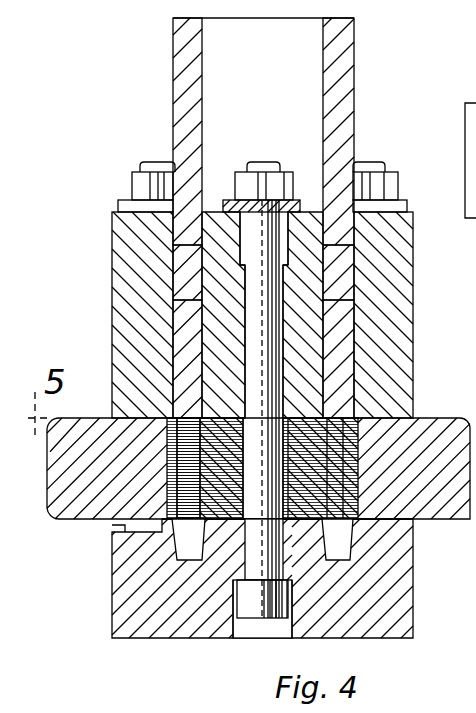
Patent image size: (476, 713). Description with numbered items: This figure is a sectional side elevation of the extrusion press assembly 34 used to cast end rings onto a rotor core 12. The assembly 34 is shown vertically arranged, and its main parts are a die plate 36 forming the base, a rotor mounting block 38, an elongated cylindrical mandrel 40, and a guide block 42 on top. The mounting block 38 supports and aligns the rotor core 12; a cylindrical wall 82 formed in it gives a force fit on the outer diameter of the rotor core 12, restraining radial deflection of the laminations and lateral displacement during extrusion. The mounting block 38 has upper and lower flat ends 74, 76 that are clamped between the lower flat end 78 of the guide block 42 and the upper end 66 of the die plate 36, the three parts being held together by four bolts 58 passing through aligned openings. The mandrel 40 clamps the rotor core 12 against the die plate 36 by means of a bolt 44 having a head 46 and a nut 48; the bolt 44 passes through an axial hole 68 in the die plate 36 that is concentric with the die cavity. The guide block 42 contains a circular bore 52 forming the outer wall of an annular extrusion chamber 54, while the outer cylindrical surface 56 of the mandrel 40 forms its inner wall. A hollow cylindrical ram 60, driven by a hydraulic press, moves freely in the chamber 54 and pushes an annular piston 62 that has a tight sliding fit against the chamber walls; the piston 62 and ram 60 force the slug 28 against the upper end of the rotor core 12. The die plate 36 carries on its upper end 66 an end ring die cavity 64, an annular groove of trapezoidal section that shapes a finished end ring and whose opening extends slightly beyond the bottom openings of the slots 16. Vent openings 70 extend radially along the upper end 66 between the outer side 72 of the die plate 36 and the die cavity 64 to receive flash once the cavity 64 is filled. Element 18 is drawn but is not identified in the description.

The ram 60 is at (345, 70).
The extrusion press assembly 34 is at (147, 146).
The bolts 58 is at (140, 162).
The nut 48 is at (247, 162).
The annular extrusion chamber 54 is at (222, 208).
The mandrel 40 is at (305, 225).
The annular piston 62 is at (348, 266).
The guide block 42 is at (400, 292).
The circular bore 52 is at (350, 348).
The outer cylindrical surface 56 is at (284, 342).
The slug 28 is at (356, 374).
The lower flat end 78 is at (370, 418).
The rotor mounting block 38 is at (458, 418).
The slots 16 is at (173, 450).
The cylindrical wall 82 is at (173, 483).
The insert 18 is at (347, 472).
The rotor core 12 is at (360, 493).
The upper flat end 74 is at (406, 418).
The lower flat end 76 is at (392, 515).
The upper end 66 is at (407, 525).
The vent openings 70 is at (112, 532).
The axial hole 68 is at (247, 545).
The bolt 44 is at (267, 559).
The end ring die cavity 64 is at (343, 555).
The outer side 72 is at (112, 590).
The die plate 36 is at (402, 600).
The head 46 is at (255, 605).